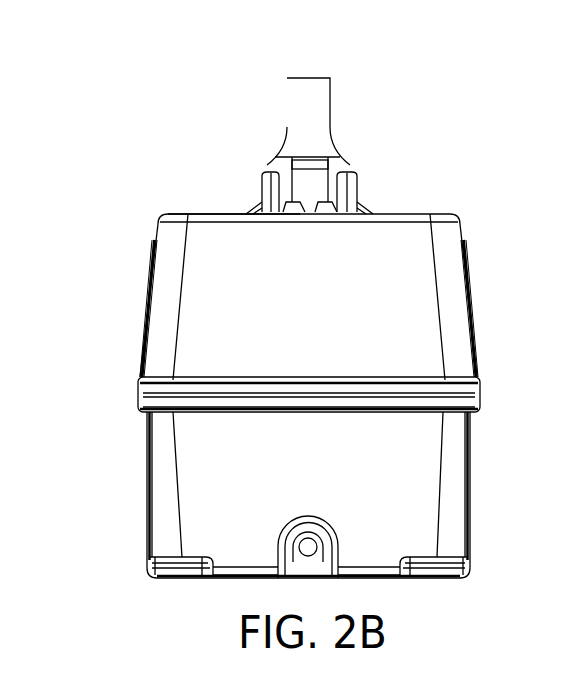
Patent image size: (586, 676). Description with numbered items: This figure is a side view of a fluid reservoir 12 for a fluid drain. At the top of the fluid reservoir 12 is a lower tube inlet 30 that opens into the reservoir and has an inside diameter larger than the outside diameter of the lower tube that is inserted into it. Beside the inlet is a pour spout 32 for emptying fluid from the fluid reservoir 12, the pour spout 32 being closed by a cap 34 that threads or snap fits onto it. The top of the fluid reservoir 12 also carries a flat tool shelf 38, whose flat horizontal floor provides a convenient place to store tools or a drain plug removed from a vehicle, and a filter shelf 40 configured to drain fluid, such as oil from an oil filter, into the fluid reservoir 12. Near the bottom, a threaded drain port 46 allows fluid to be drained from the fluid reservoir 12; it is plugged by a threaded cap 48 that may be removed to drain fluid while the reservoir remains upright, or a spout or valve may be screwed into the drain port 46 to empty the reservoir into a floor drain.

The fluid reservoir 12 is at (176, 124).
The lower tube inlet 30 is at (323, 98).
The pour spout 32 is at (313, 183).
The cap 34 is at (308, 163).
The flat tool shelf 38 is at (203, 214).
The filter shelf 40 is at (422, 214).
The threaded drain port 46 is at (325, 530).
The threaded cap 48 is at (293, 532).